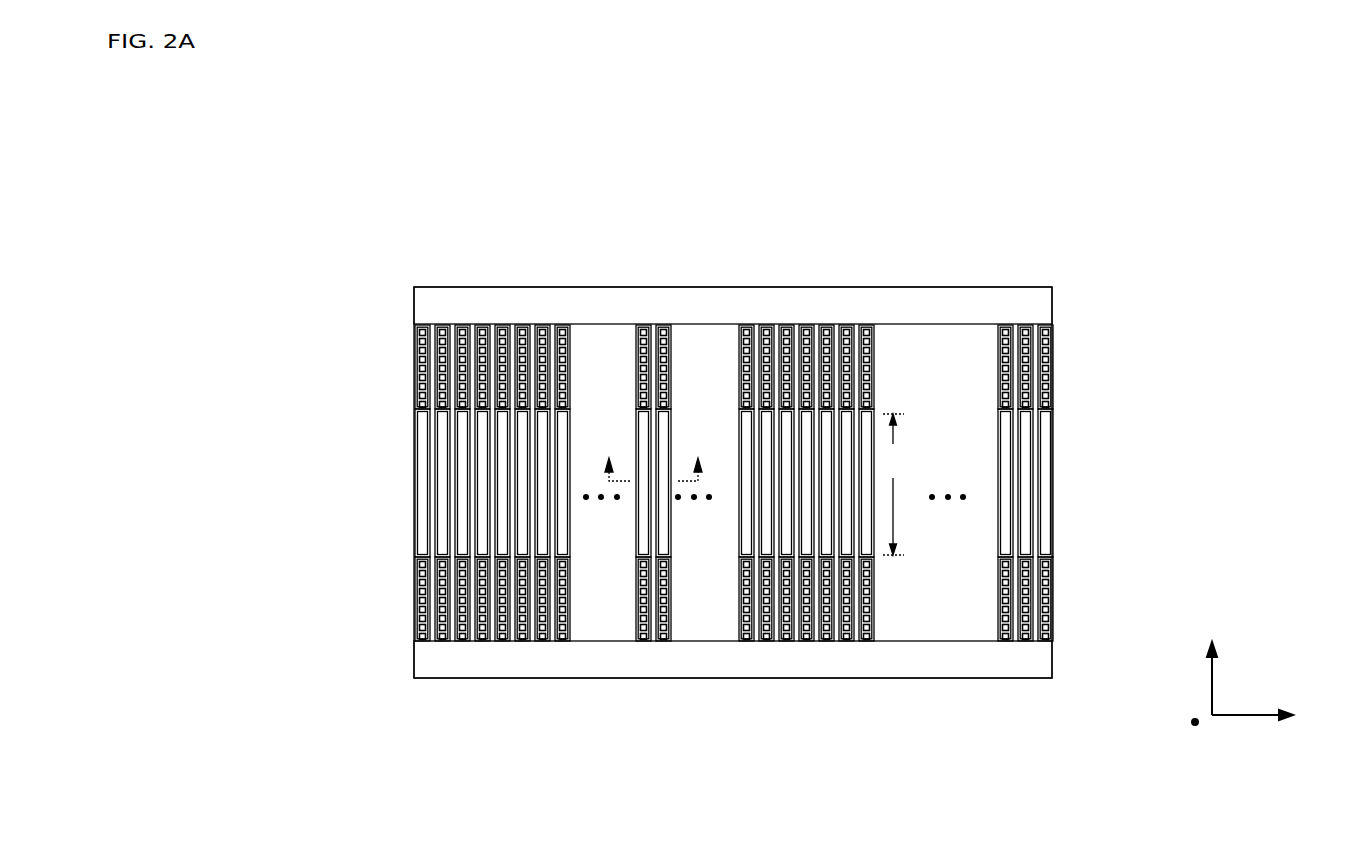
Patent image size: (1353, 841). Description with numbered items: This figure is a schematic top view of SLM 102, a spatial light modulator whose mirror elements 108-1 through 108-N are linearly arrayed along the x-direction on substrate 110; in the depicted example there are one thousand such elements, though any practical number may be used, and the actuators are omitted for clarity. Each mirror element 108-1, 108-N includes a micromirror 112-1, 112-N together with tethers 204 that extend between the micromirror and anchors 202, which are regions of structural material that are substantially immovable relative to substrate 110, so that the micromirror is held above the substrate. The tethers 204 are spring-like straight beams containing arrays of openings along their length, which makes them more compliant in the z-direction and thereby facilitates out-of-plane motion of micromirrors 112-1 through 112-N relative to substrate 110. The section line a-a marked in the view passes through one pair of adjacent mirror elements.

The SLM 102 is at (303, 237).
The anchor 202 is at (545, 315).
The tether 204 is at (416, 389).
The mirror element 108-1 is at (290, 497).
The mirror element 108-N is at (1184, 483).
The micromirror 112-1 is at (422, 515).
The micromirror 112-N is at (1045, 513).
The substrate 110 is at (921, 620).